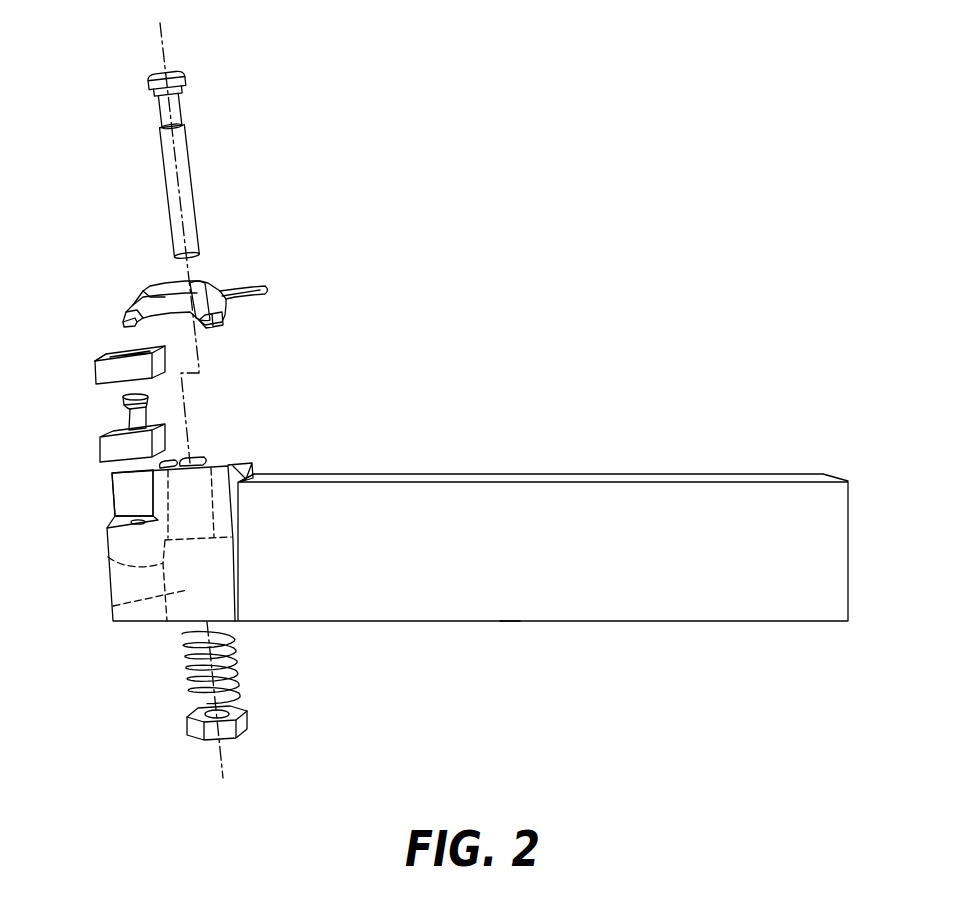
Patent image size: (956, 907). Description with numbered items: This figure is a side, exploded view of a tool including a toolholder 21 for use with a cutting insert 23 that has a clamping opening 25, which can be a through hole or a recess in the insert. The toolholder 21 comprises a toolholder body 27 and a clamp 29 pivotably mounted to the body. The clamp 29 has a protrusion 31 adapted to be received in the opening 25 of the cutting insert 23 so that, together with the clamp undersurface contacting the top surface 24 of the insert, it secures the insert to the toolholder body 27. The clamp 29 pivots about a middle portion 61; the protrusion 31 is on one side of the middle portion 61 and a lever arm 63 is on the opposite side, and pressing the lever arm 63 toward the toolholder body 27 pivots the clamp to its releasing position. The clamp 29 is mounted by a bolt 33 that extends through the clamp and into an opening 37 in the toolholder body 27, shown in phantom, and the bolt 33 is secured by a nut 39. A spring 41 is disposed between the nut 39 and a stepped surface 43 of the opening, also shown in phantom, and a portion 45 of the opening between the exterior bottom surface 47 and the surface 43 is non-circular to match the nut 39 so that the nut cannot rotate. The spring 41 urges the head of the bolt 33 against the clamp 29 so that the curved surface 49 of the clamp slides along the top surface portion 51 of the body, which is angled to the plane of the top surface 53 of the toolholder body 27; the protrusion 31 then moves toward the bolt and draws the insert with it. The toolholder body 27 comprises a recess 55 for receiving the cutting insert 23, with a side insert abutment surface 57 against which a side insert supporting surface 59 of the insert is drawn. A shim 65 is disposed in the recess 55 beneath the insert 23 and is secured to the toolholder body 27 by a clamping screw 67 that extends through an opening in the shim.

The toolholder 21 is at (309, 69).
The bolt 33 is at (192, 150).
The clamp 29 is at (189, 289).
The protrusion 31 is at (125, 328).
The middle portion 61 is at (216, 282).
The lever arm 63 is at (268, 290).
The curved surface 49 is at (211, 327).
The cutting insert 23 is at (138, 361).
The top surface 24 is at (108, 353).
The clamping opening 25 is at (128, 355).
The side insert supporting surface 59 is at (160, 366).
The clamping screw 67 is at (122, 405).
The shim 65 is at (92, 451).
The opening 37 is at (131, 556).
The side insert abutment surface 57 is at (127, 487).
The recess 55 is at (108, 516).
The surface 43 is at (108, 557).
The portion of the opening 45 is at (113, 606).
The top surface portion 51 is at (228, 464).
The toolholder body 27 is at (541, 555).
The top surface 53 is at (597, 475).
The exterior bottom surface 47 is at (511, 622).
The spring 41 is at (240, 668).
The nut 39 is at (187, 727).